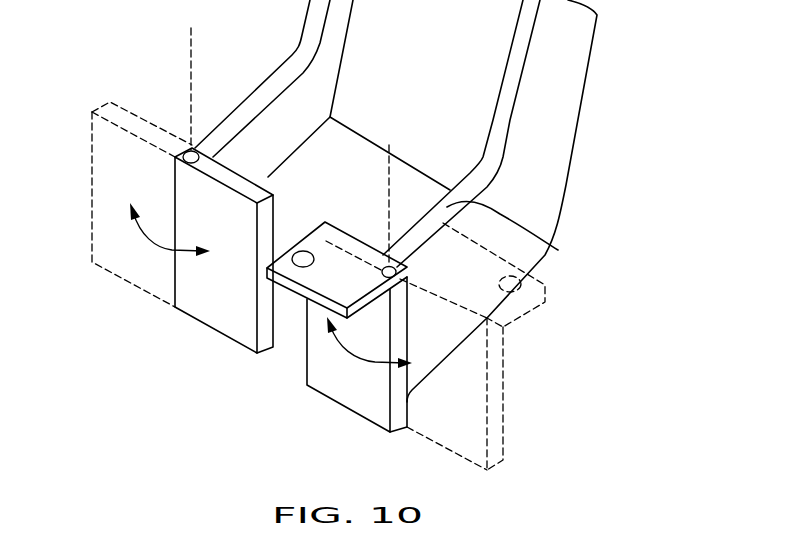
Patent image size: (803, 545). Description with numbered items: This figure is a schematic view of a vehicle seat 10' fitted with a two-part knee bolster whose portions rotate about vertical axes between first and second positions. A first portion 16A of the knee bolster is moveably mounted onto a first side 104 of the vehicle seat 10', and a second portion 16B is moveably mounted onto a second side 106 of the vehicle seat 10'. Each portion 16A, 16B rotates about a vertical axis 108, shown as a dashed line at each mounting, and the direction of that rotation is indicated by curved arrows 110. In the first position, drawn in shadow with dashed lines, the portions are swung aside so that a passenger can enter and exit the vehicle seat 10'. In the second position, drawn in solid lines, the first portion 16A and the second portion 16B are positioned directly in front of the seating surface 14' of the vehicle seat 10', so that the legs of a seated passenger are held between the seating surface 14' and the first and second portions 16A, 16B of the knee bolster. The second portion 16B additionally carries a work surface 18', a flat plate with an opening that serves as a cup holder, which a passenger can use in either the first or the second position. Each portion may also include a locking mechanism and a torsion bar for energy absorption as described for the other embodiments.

The vehicle seat 10' is at (518, 201).
The seating surface 14' is at (349, 95).
The first portion 16A is at (208, 300).
The second portion 16B is at (357, 395).
The work surface 18' is at (316, 304).
The first side 104 is at (274, 88).
The second side 106 is at (558, 250).
The vertical axis 108 is at (190, 100).
The arrows 110 is at (152, 247).